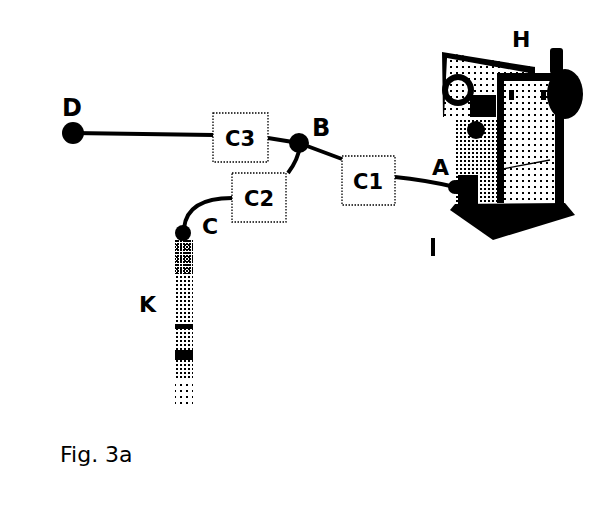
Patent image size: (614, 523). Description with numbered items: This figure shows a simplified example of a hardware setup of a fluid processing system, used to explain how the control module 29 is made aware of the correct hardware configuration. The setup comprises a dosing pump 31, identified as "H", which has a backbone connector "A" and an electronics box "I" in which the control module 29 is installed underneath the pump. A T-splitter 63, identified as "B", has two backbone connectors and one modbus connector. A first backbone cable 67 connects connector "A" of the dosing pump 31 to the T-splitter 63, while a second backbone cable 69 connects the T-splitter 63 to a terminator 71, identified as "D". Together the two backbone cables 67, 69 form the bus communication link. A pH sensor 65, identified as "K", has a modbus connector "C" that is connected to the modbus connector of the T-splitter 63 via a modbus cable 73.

The control module 29 is at (486, 162).
The dosing pump 31 is at (420, 98).
The T-splitter 63 is at (296, 134).
The pH sensor 65 is at (190, 283).
The first backbone cable 67 is at (408, 178).
The second backbone cable 69 is at (133, 131).
The terminator 71 is at (63, 129).
The modbus cable 73 is at (215, 192).